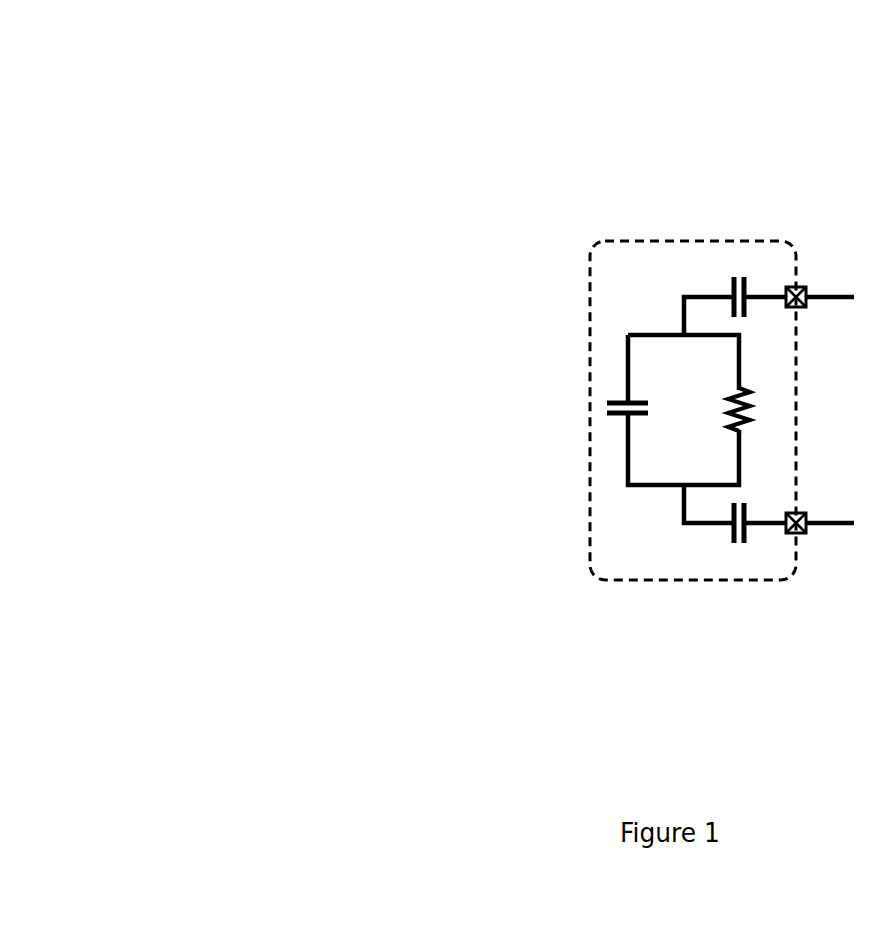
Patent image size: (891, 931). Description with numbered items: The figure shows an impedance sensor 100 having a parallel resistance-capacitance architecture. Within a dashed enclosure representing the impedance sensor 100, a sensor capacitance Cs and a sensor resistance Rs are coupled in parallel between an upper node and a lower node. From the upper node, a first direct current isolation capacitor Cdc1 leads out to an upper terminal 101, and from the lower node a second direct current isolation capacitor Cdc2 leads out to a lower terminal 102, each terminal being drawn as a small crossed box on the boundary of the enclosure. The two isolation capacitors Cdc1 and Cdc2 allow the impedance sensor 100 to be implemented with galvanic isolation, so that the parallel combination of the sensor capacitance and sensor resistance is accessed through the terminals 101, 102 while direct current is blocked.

The impedance sensor 100 is at (122, 94).
The first port 101 is at (822, 286).
The second port 102 is at (822, 533).